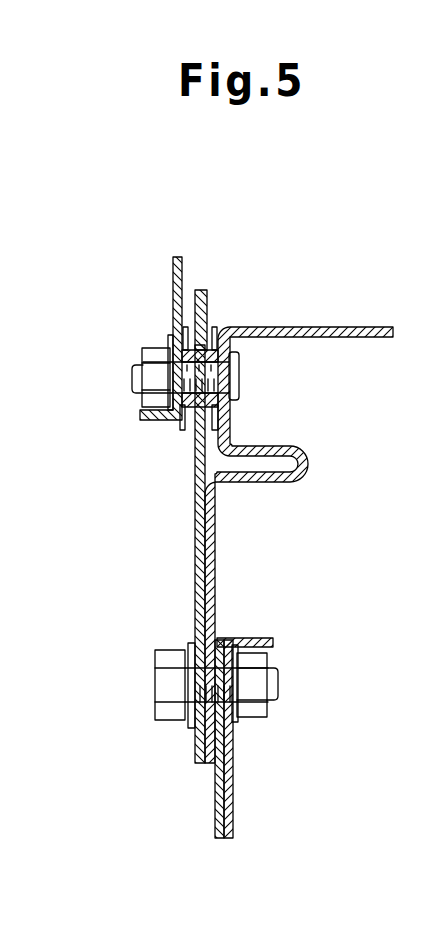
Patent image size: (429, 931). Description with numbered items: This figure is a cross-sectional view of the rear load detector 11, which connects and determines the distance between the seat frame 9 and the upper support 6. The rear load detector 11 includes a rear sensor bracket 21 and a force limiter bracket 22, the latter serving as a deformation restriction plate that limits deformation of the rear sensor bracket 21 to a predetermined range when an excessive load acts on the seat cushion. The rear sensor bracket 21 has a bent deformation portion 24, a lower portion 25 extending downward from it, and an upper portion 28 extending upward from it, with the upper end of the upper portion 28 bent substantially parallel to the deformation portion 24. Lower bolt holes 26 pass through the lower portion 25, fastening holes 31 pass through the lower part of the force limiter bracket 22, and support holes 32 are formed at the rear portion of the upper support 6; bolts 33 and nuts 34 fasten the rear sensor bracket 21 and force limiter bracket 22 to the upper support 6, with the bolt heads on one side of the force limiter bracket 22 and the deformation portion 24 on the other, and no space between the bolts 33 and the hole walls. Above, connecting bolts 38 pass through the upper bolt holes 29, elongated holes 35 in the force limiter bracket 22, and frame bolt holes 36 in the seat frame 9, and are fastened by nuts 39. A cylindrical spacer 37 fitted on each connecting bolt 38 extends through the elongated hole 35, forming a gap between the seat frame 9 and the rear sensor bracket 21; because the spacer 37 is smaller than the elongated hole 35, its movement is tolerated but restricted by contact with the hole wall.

The upper support 6 is at (218, 806).
The seat frame 9 is at (173, 268).
The rear load detector 11 is at (357, 433).
The rear sensor bracket 21 is at (381, 327).
The force limiter bracket 22 is at (200, 291).
The deformation portion 24 is at (309, 470).
The lower portion 25 is at (197, 750).
The lower bolt holes 26 is at (228, 695).
The upper portion 28 is at (222, 412).
The upper bolt holes 29 is at (240, 365).
The fastening holes 31 is at (180, 690).
The support holes 32 is at (274, 690).
The bolts 33 is at (175, 655).
The nuts 34 is at (268, 668).
The elongated holes 35 is at (219, 341).
The frame bolt holes 36 is at (148, 392).
The cylindrical spacer 37 is at (185, 432).
The connecting bolt 38 is at (240, 385).
The nuts 39 is at (155, 348).